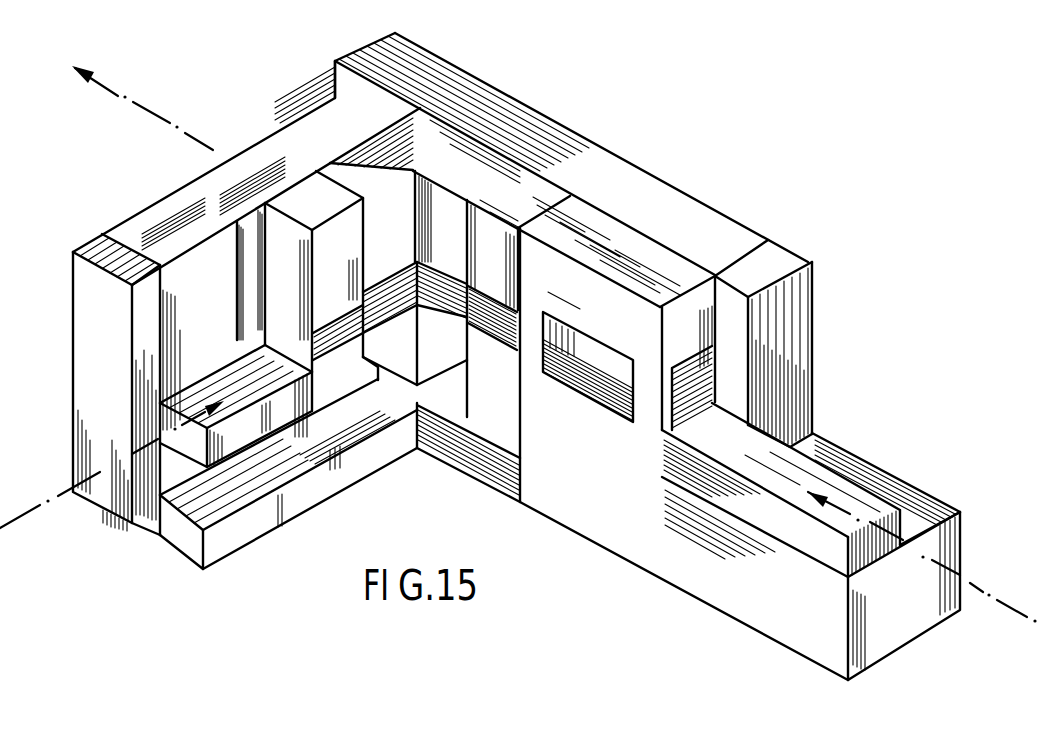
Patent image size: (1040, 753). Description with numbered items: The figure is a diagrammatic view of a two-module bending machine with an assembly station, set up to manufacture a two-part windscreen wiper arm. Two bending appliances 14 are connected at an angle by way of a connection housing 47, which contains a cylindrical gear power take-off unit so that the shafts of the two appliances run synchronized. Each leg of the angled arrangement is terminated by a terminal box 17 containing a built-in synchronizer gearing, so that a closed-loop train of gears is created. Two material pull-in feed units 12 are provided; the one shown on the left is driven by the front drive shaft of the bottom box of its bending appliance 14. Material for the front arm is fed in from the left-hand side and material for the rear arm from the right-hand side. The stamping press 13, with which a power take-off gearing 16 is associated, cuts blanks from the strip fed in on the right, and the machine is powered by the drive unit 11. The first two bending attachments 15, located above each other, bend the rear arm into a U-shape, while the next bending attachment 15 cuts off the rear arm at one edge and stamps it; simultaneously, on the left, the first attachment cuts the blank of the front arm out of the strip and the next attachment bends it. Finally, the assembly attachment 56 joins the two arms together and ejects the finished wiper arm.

The drive unit 11 is at (878, 642).
The material pull-in feed unit 12 is at (230, 387).
The stamping press 13 is at (695, 208).
The bending appliance 14 is at (264, 157).
The bending attachment 15 is at (337, 282).
The power take-off gearing 16 is at (785, 256).
The terminal box 17 is at (90, 352).
The connection housing 47 is at (333, 113).
The assembly attachment 56 is at (423, 162).